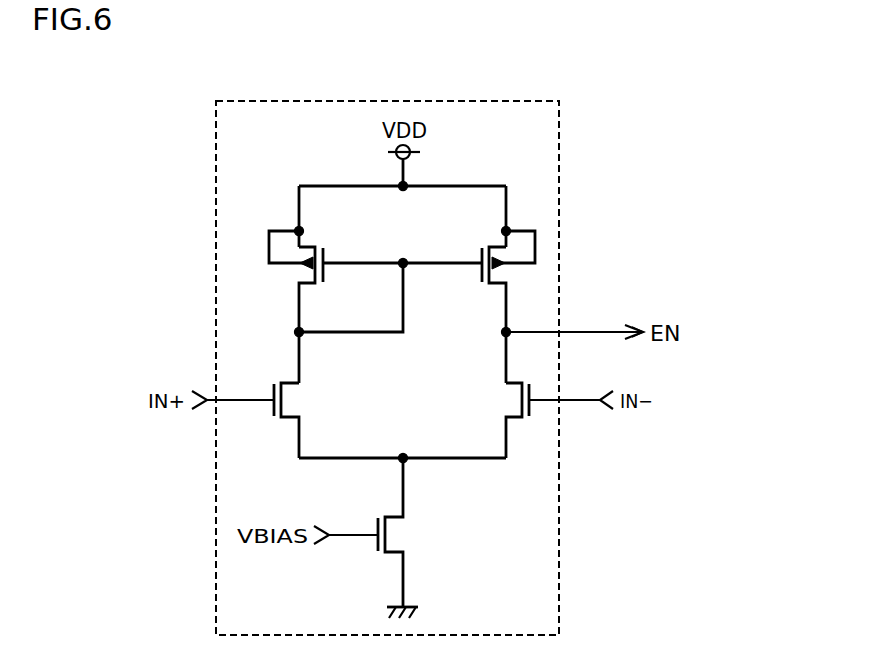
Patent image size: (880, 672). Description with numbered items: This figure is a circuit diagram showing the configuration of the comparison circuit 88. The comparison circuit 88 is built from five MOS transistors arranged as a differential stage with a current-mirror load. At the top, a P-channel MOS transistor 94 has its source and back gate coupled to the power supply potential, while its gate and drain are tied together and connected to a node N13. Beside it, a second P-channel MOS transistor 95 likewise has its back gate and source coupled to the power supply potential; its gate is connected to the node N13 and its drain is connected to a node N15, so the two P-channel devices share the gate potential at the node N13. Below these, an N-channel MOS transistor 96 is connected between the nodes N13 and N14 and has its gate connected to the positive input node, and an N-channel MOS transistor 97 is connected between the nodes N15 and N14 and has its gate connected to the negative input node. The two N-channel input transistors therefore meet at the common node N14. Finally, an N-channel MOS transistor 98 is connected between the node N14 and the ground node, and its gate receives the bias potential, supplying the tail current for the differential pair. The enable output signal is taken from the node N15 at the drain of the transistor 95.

The comparison circuit 88 is at (522, 100).
The P-channel MOS transistor 94 is at (321, 240).
The P-channel MOS transistor 95 is at (485, 240).
The N-channel MOS transistor 96 is at (302, 400).
The N-channel MOS transistor 97 is at (504, 400).
The N-channel MOS transistor 98 is at (406, 535).
The node N13 is at (403, 258).
The node N14 is at (403, 451).
The node N15 is at (500, 331).